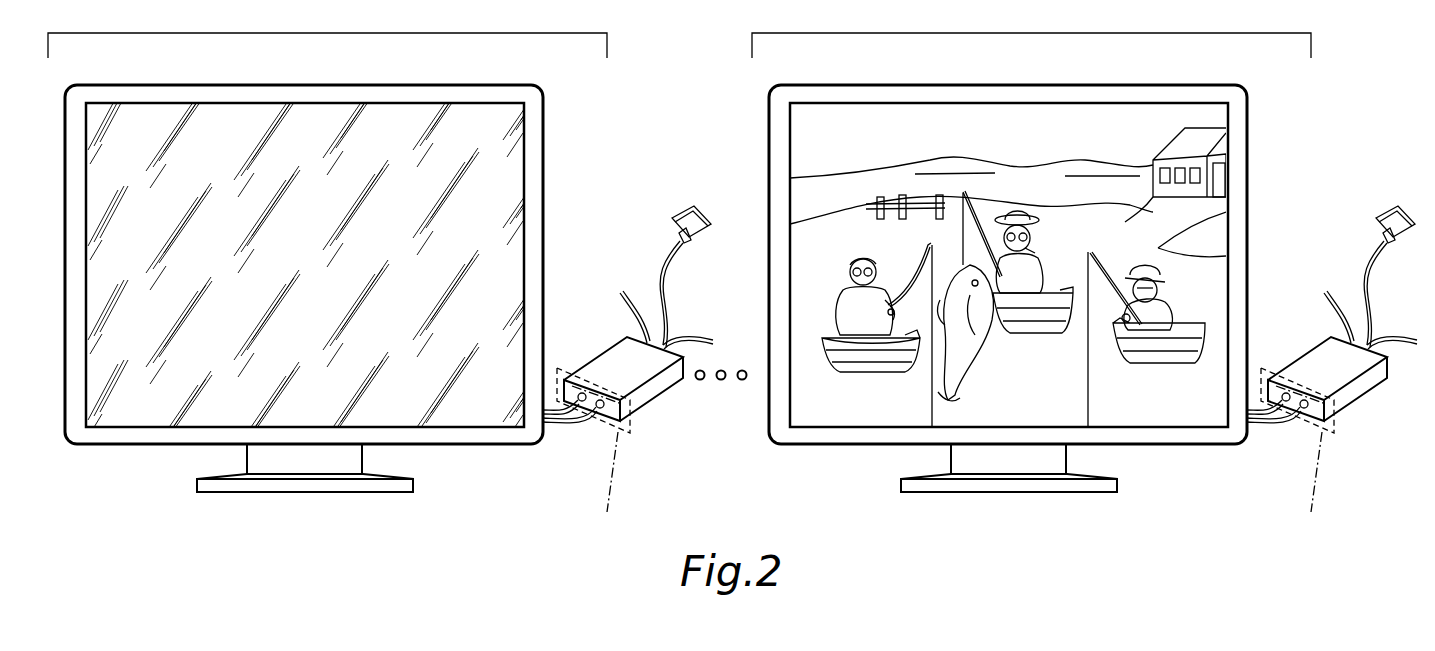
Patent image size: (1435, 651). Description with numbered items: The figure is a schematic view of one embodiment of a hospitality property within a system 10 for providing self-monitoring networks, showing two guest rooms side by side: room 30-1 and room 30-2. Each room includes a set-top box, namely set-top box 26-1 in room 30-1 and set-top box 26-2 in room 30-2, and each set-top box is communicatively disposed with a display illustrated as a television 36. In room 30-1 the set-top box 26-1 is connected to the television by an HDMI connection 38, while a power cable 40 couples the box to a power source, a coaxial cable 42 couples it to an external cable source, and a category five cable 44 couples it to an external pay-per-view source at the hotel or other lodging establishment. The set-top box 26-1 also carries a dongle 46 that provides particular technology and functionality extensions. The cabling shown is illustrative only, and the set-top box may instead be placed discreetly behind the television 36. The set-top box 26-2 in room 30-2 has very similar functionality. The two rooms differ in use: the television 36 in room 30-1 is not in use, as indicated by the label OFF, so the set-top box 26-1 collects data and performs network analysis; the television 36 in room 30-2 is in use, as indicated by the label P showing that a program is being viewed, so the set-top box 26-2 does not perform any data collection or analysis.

The system for providing self-monitoring networks 10 is at (650, 156).
The television 36 is at (549, 173).
The category five (Cat 5) cable 44 is at (690, 333).
The dongle 46 is at (700, 210).
The coaxial cable 42 is at (629, 299).
The set-top box 26-1 is at (667, 397).
The set-top box 26-2 is at (1331, 435).
The HDMI connection 38 is at (572, 421).
The power cable 40 is at (555, 420).
The room 30-1 is at (327, 47).
The room 30-2 is at (1031, 47).
The label P (program being viewed) P is at (847, 406).